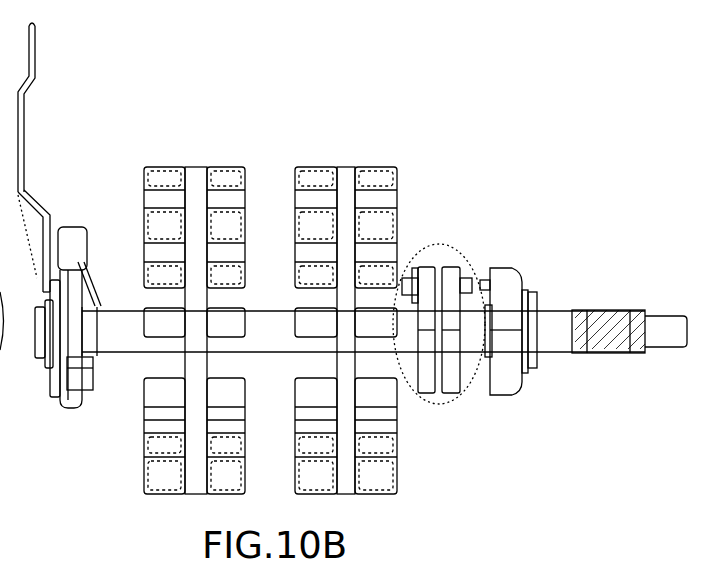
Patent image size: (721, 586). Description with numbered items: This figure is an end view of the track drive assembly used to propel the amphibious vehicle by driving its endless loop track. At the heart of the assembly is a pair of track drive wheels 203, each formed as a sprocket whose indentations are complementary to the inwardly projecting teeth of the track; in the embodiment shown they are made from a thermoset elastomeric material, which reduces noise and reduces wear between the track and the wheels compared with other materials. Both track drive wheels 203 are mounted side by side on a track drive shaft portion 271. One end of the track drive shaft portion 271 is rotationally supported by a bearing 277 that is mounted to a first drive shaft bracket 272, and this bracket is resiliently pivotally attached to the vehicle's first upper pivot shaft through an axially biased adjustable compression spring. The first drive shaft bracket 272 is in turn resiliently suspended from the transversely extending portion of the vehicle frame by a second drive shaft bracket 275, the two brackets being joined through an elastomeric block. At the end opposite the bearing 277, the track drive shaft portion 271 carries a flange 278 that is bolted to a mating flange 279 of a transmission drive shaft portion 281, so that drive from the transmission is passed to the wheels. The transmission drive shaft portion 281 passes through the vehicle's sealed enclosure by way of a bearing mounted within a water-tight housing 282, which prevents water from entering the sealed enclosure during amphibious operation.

The track drive wheel 203 is at (145, 450).
The track drive shaft portion 271 is at (257, 308).
The first drive shaft bracket 272 is at (70, 227).
The second drive shaft bracket 275 is at (25, 100).
The bearing 277 is at (72, 347).
The flange 278 is at (422, 267).
The flange 279 is at (450, 267).
The transmission drive shaft portion 281 is at (555, 320).
The water-tight housing 282 is at (502, 267).